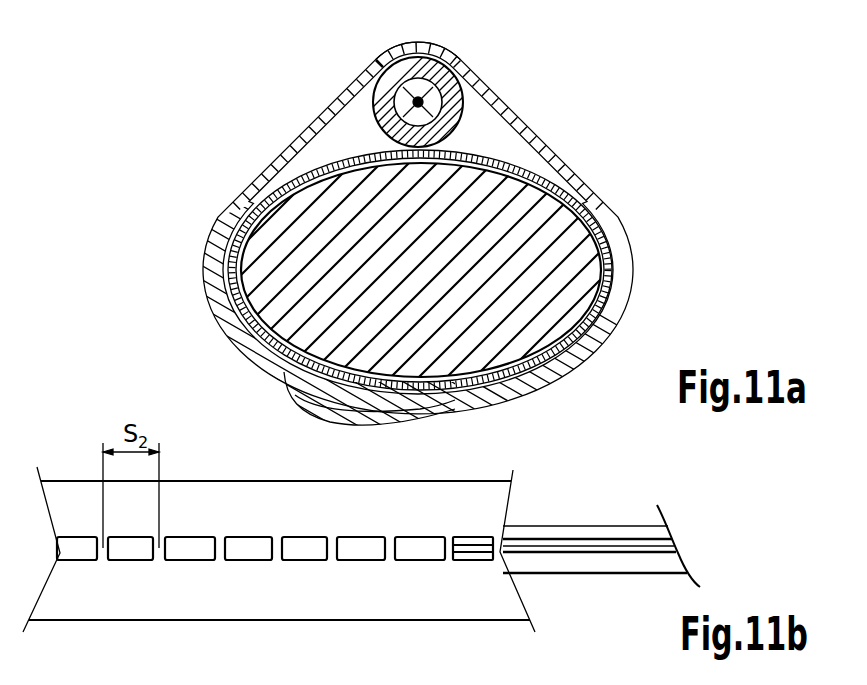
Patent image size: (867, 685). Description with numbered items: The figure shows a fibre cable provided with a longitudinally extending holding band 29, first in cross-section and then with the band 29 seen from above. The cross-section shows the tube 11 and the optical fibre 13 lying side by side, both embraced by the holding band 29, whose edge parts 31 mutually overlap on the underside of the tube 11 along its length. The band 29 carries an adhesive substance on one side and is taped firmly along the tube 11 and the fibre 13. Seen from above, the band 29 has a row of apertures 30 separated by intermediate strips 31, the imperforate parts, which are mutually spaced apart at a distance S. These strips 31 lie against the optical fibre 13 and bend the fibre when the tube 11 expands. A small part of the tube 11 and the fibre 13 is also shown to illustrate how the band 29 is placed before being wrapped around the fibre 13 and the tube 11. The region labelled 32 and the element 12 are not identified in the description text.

In FIG. 11A, the tube 11 is at (487, 157).
In FIG. 11B, the tube 11 is at (657, 535).
In FIG. 11A, the core bundle 12 is at (583, 258).
In FIG. 11A, the optical fibre 13 is at (379, 119).
In FIG. 11B, the optical fibre 13 is at (652, 545).
In FIG. 11A, the holding band 29 is at (570, 154).
In FIG. 11B, the holding band 29 is at (486, 474).
In FIG. 11B, the apertures 30 is at (420, 548).
In FIG. 11A, the intermediate strips 31 is at (468, 73).
In FIG. 11B, the intermediate strips 31 is at (388, 550).
In FIG. 11A, the tape strip 32 is at (297, 413).
In FIG. 11B, the tape strip 32 is at (240, 505).